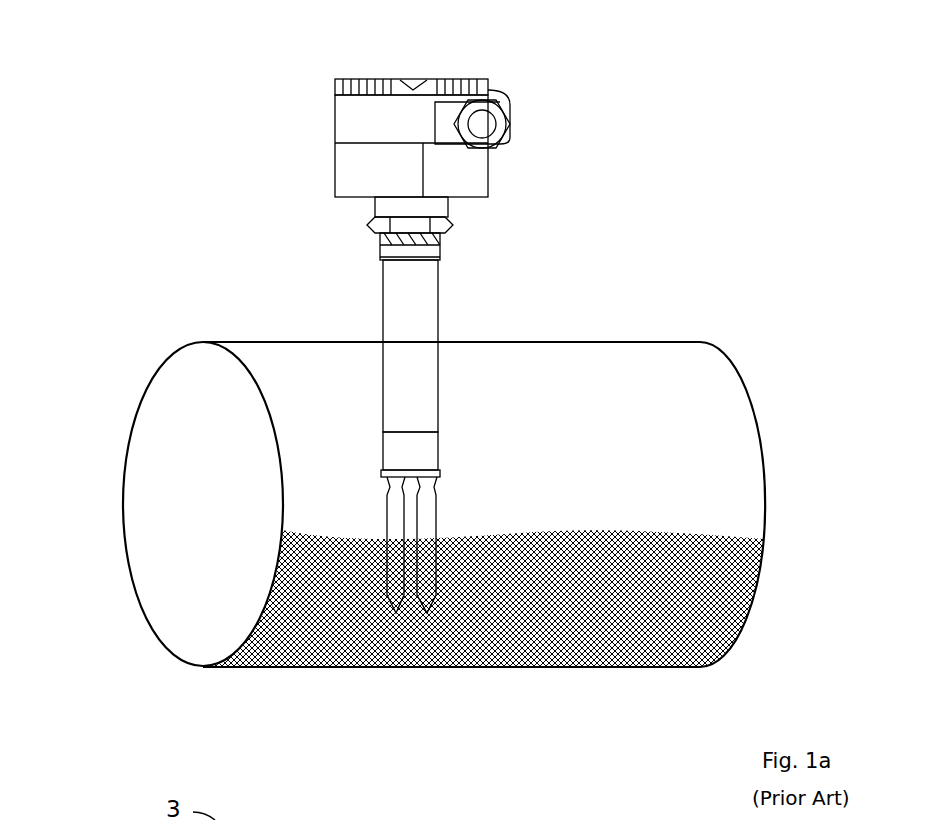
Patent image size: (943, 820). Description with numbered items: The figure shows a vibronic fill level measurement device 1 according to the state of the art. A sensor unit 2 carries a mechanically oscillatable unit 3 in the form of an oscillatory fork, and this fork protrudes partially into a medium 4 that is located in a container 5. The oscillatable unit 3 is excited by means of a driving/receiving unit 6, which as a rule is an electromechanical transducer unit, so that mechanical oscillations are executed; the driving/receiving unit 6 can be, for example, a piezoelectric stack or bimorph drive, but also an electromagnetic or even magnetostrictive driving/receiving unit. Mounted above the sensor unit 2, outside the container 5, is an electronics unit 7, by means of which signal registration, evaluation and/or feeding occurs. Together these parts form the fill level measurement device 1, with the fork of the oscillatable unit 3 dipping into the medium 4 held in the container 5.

The vibronic fill level measurement device 1 is at (95, 55).
The sensor unit 2 is at (480, 487).
The mechanically oscillatable unit 3 is at (438, 562).
The medium 4 is at (613, 623).
The container 5 is at (723, 652).
The driving/receiving unit 6 is at (424, 446).
The electronics unit 7 is at (465, 170).